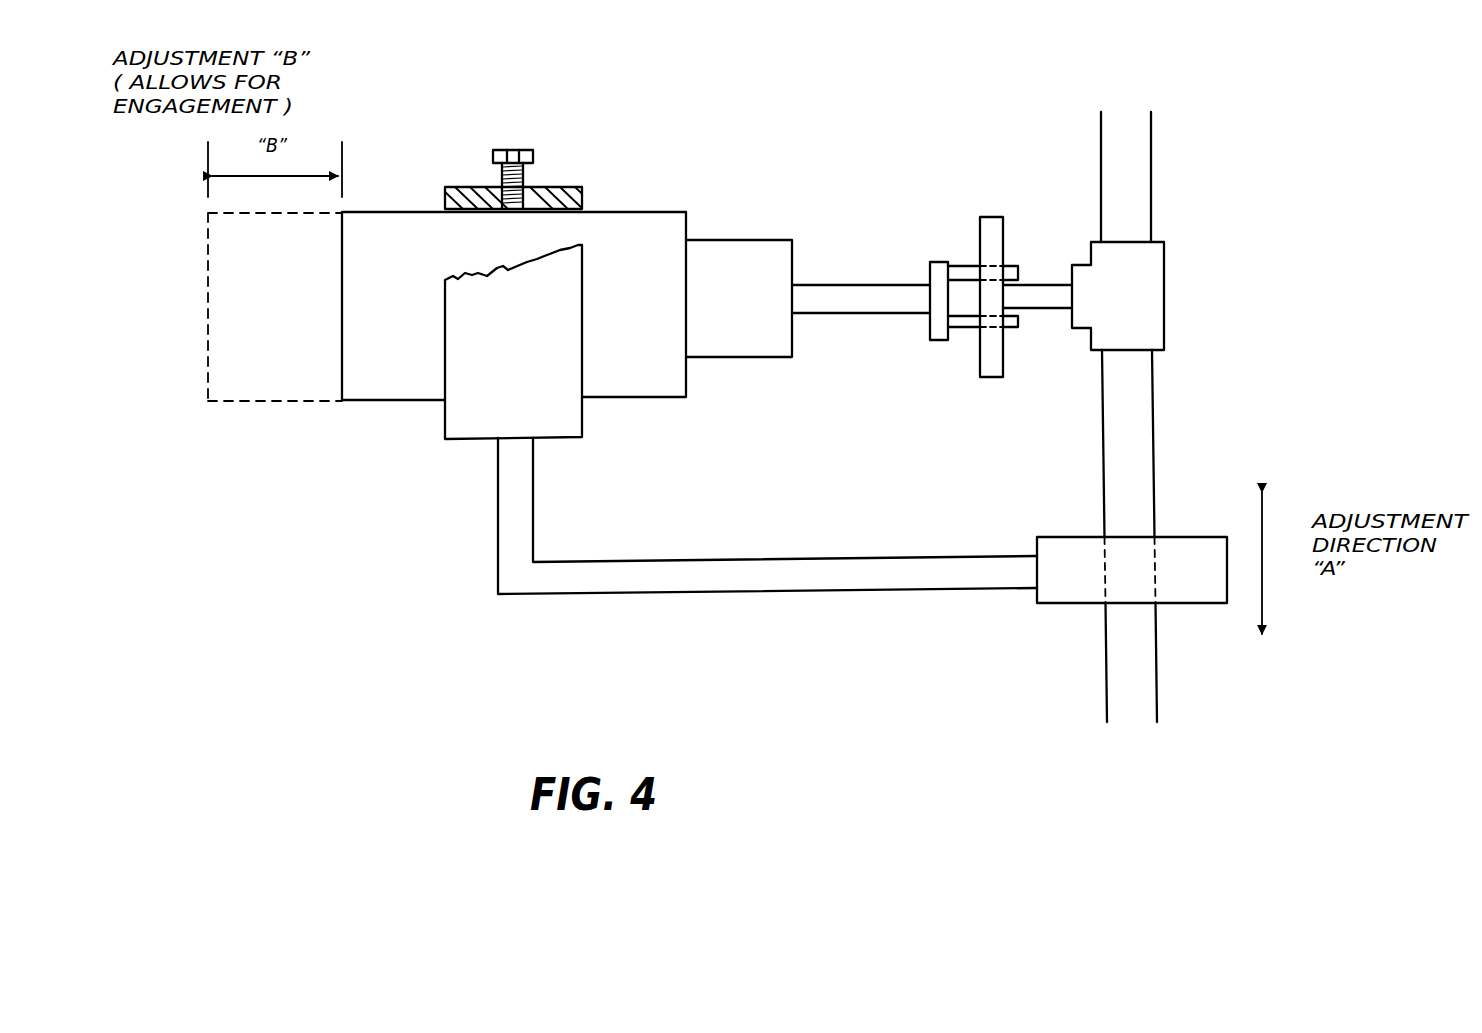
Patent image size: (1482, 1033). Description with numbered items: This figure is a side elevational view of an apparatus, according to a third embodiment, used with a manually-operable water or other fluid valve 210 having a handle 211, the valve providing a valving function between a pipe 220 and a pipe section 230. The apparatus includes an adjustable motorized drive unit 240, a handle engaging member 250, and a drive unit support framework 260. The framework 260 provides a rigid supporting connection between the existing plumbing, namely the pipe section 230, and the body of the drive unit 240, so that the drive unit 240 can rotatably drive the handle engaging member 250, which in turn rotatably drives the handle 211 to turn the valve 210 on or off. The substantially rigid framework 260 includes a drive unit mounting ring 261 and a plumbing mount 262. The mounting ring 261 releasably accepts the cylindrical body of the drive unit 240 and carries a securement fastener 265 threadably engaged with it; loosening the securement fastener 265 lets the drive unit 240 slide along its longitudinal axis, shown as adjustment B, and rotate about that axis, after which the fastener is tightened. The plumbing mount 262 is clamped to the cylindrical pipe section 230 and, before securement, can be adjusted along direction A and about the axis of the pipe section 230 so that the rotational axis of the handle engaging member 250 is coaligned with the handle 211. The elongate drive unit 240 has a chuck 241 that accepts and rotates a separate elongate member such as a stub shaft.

The valve 210 is at (1098, 337).
The handle 211 is at (992, 370).
The pipe 220 is at (1138, 195).
The pipe section 230 is at (1142, 647).
The drive unit 240 is at (642, 222).
The chuck 241 is at (795, 377).
The handle engaging member 250 is at (938, 270).
The drive unit support framework 260 is at (633, 582).
The drive unit mounting ring 261 is at (455, 422).
The plumbing mount 262 is at (1075, 590).
The securement fastener 265 is at (512, 148).